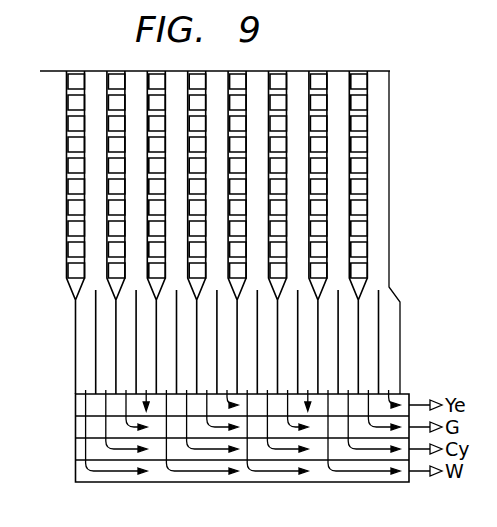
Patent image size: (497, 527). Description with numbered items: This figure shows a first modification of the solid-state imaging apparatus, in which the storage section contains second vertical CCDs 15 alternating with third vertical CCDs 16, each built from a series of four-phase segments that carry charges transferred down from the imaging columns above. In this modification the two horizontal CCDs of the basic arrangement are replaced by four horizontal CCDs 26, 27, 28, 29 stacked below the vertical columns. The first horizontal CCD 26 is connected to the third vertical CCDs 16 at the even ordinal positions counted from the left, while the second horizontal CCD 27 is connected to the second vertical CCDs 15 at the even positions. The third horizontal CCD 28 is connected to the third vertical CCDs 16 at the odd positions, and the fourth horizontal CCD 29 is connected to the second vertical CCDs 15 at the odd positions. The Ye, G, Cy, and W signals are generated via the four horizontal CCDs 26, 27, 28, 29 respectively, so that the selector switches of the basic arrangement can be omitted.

The second vertical CCD 15 is at (85, 310).
The third vertical CCD 16 is at (98, 341).
The first horizontal CCD 26 is at (75, 405).
The second horizontal CCD 27 is at (75, 427).
The third horizontal CCD 28 is at (75, 449).
The fourth horizontal CCD 29 is at (75, 471).